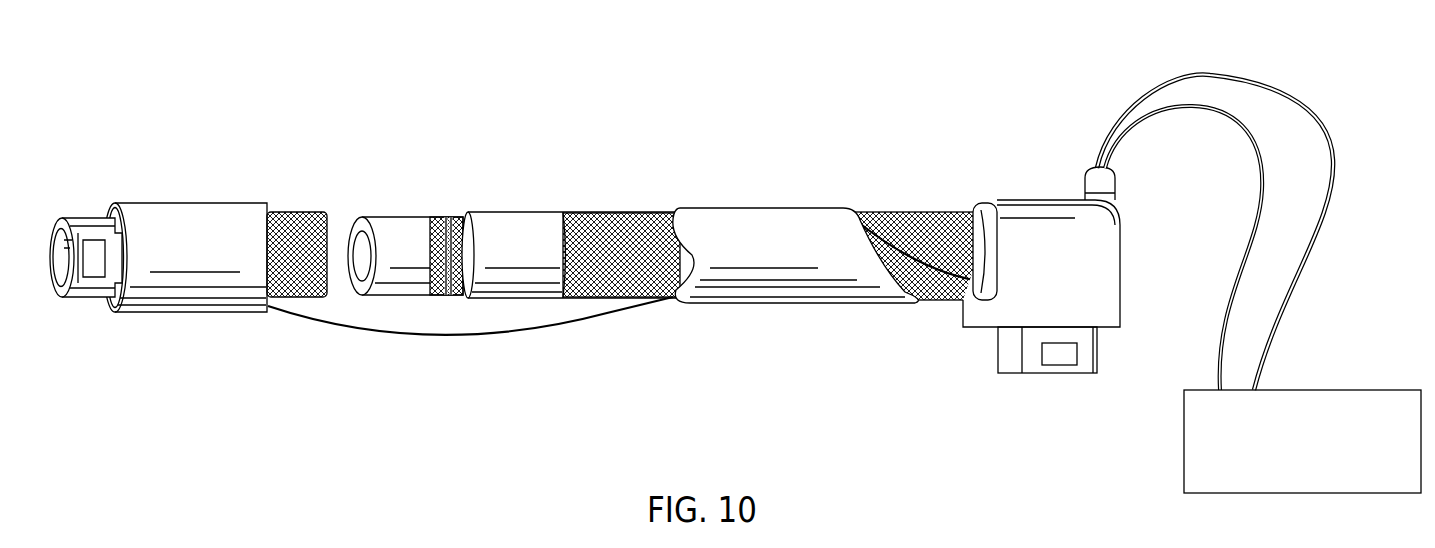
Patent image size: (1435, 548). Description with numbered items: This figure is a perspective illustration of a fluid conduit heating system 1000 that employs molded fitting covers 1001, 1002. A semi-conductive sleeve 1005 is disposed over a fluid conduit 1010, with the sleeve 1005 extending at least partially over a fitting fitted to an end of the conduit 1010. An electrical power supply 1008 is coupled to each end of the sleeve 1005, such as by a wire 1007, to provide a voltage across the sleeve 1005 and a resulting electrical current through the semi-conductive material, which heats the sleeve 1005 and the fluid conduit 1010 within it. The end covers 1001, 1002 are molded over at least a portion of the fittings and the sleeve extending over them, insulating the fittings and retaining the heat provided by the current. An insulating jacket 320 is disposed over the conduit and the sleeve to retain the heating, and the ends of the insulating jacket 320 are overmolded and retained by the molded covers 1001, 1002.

The fluid conduit heating system 1000 is at (826, 190).
The molded fitting cover 1001 is at (242, 324).
The molded fitting cover 1002 is at (1042, 176).
The semi-conductive sleeve 1005 is at (297, 212).
The wire 1007 is at (541, 328).
The electrical power supply 1008 is at (1226, 118).
The fluid conduit 1010 is at (514, 202).
The insulating jacket 320 is at (809, 312).